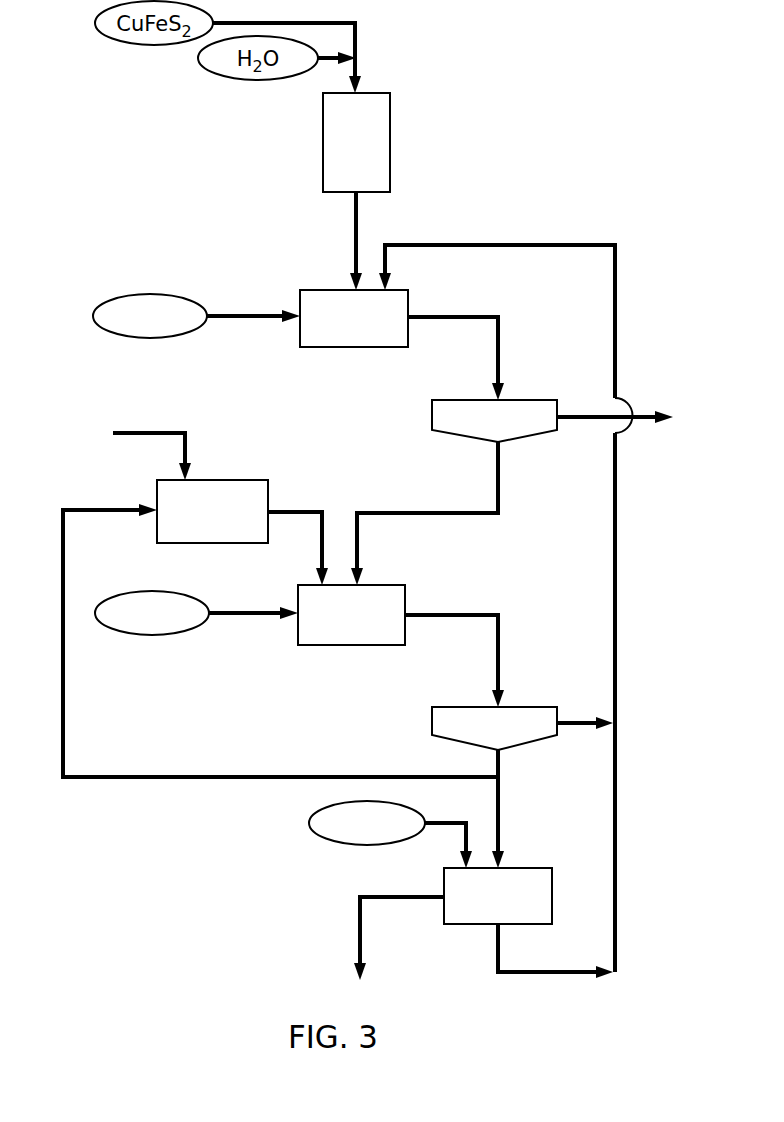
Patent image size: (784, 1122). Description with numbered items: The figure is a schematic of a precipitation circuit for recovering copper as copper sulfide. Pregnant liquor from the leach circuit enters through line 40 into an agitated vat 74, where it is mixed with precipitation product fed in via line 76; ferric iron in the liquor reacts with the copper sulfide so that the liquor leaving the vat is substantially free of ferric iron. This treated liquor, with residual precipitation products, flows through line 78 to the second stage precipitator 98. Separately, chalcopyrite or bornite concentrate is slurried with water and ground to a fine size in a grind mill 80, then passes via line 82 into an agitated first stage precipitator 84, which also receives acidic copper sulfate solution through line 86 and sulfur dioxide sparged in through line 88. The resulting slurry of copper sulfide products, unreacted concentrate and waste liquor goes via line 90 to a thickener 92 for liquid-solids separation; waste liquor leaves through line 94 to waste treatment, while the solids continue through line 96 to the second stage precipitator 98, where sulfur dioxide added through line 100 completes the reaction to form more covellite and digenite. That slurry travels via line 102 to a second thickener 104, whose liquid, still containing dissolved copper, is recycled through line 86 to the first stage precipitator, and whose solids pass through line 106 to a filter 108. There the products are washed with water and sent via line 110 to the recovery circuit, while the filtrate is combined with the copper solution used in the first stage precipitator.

The line 40 is at (137, 430).
The agitated vat 74 is at (212, 511).
The line 76 is at (66, 703).
The line 78 is at (297, 510).
The grind mill 80 is at (356, 142).
The line 82 is at (355, 222).
The first stage precipitator 84 is at (354, 318).
The line 86 is at (618, 299).
The line 88 is at (237, 319).
The line 90 is at (500, 334).
The thickener 92 is at (494, 421).
The line 94 is at (636, 420).
The line 96 is at (405, 511).
The second stage precipitator 98 is at (351, 615).
The line 100 is at (236, 617).
The line 102 is at (500, 645).
The thickener 104 is at (522, 728).
The line 106 is at (500, 811).
The filter 108 is at (461, 889).
The line 110 is at (392, 903).